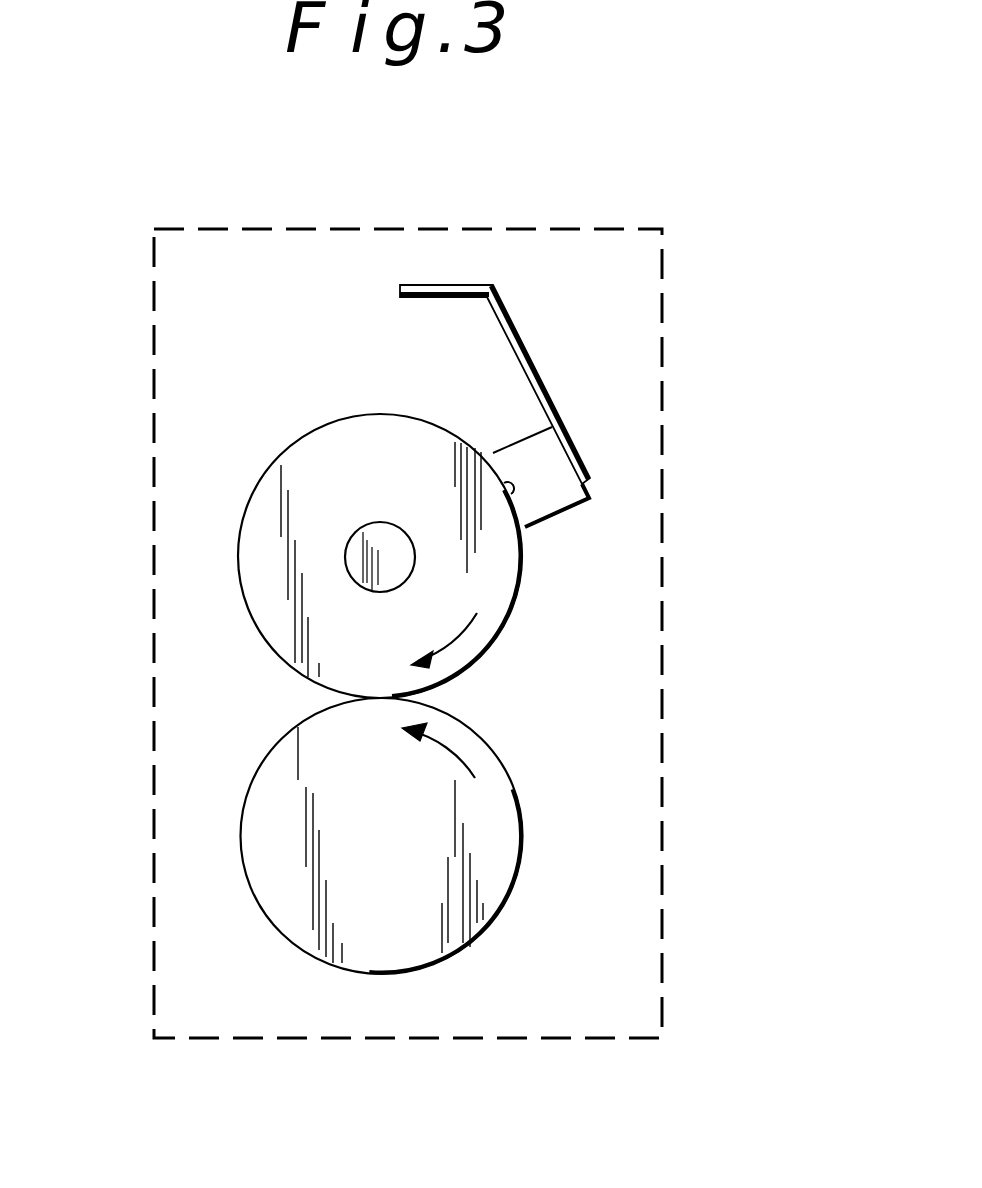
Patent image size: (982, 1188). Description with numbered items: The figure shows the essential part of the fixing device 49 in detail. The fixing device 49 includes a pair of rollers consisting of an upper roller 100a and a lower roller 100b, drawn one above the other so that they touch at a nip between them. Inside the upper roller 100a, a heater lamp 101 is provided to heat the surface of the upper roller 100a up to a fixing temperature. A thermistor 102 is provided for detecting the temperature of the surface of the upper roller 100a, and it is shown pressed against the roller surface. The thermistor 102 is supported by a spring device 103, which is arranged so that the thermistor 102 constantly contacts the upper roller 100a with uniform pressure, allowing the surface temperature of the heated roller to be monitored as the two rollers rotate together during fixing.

The fixing device 49 is at (663, 838).
The upper roller 100a is at (505, 562).
The lower roller 100b is at (422, 942).
The heater lamp 101 is at (363, 555).
The thermistor 102 is at (560, 497).
The spring device 103 is at (468, 285).